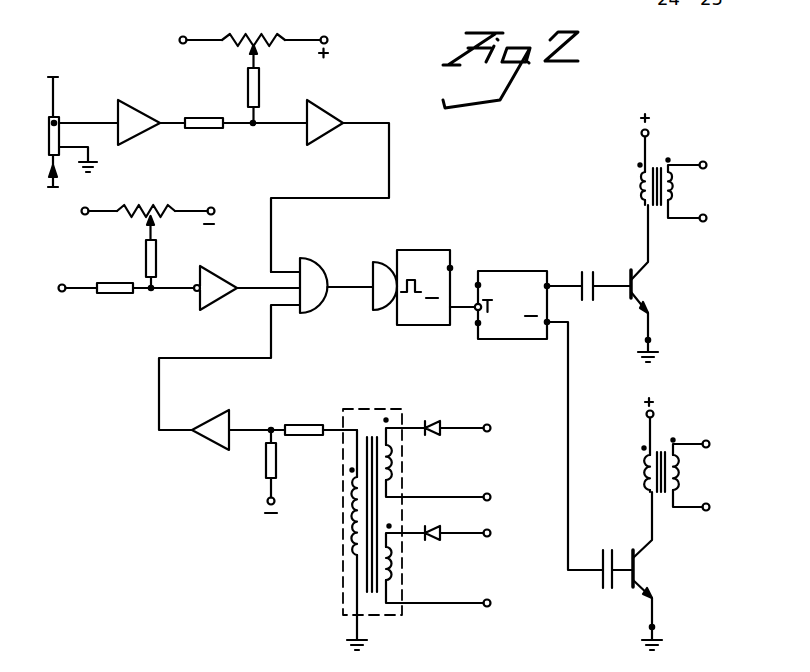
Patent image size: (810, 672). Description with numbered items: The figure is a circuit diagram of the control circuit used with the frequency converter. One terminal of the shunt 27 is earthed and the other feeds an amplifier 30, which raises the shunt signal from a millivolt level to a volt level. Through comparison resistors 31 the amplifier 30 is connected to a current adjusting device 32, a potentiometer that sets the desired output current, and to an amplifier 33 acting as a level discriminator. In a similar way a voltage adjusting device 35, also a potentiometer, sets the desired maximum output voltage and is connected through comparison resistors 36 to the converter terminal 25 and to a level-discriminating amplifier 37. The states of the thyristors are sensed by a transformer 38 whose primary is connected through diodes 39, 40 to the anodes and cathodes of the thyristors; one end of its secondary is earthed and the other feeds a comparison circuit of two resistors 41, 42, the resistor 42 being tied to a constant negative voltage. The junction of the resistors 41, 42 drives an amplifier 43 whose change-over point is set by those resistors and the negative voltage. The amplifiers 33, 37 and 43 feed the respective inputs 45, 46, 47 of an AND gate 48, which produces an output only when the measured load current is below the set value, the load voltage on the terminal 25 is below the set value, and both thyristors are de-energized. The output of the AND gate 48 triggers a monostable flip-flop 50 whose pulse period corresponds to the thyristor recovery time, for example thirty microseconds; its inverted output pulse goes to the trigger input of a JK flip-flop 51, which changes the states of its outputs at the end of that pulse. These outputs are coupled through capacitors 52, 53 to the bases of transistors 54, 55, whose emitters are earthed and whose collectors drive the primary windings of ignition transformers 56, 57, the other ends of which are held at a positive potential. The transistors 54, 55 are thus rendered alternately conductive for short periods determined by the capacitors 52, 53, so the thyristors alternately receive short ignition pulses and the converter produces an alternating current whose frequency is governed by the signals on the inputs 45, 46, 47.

The terminal 25 is at (117, 273).
The shunt 27 is at (49, 126).
The amplifier 30 is at (145, 101).
The comparison resistors 31 is at (248, 92).
The current adjusting device 32 is at (267, 33).
The amplifier 33 is at (326, 112).
The voltage adjusting device 35 is at (159, 205).
The comparison resistors 36 is at (146, 259).
The amplifier 37 is at (210, 279).
The transformer 38 is at (345, 600).
The diode 39 is at (428, 420).
The diode 40 is at (432, 539).
The resistor 41 is at (298, 424).
The resistor 42 is at (277, 452).
The amplifier 43 is at (207, 440).
The input 45 is at (297, 268).
The input 46 is at (297, 290).
The input 47 is at (297, 306).
The AND gate 48 is at (326, 268).
The monostable flip-flop 50 is at (425, 250).
The JK flip-flop 51 is at (505, 271).
The capacitor 52 is at (592, 273).
The capacitor 53 is at (613, 555).
The transistor 54 is at (641, 283).
The transistor 55 is at (643, 561).
The ignition transformer 56 is at (641, 191).
The ignition transformer 57 is at (648, 478).